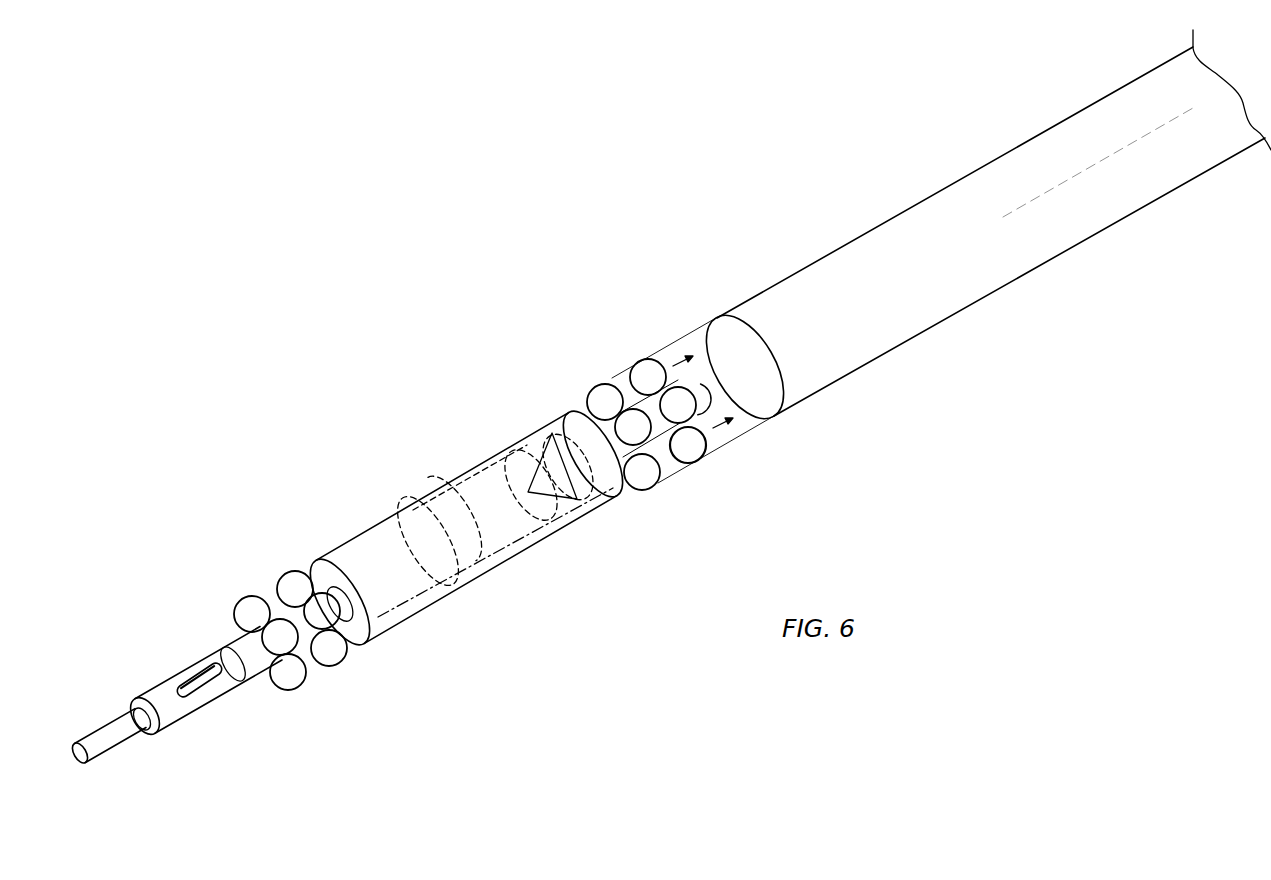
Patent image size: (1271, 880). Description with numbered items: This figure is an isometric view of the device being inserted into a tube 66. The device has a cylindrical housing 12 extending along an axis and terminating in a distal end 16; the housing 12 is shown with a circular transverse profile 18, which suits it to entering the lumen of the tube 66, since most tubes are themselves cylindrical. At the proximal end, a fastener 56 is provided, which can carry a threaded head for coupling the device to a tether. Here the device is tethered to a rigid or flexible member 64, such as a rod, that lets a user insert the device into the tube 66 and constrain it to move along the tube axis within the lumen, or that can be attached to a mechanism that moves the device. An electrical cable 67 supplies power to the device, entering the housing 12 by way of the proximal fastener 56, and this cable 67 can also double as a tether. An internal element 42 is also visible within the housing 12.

The housing 12 is at (523, 533).
The distal end 16 is at (352, 675).
The circular transverse profile 18 is at (662, 491).
The sensor element 42 is at (576, 483).
The fastener 56 is at (257, 675).
The rigid or flexible member 64 is at (122, 735).
The tube 66 is at (885, 357).
The electrical cable 67 is at (207, 683).